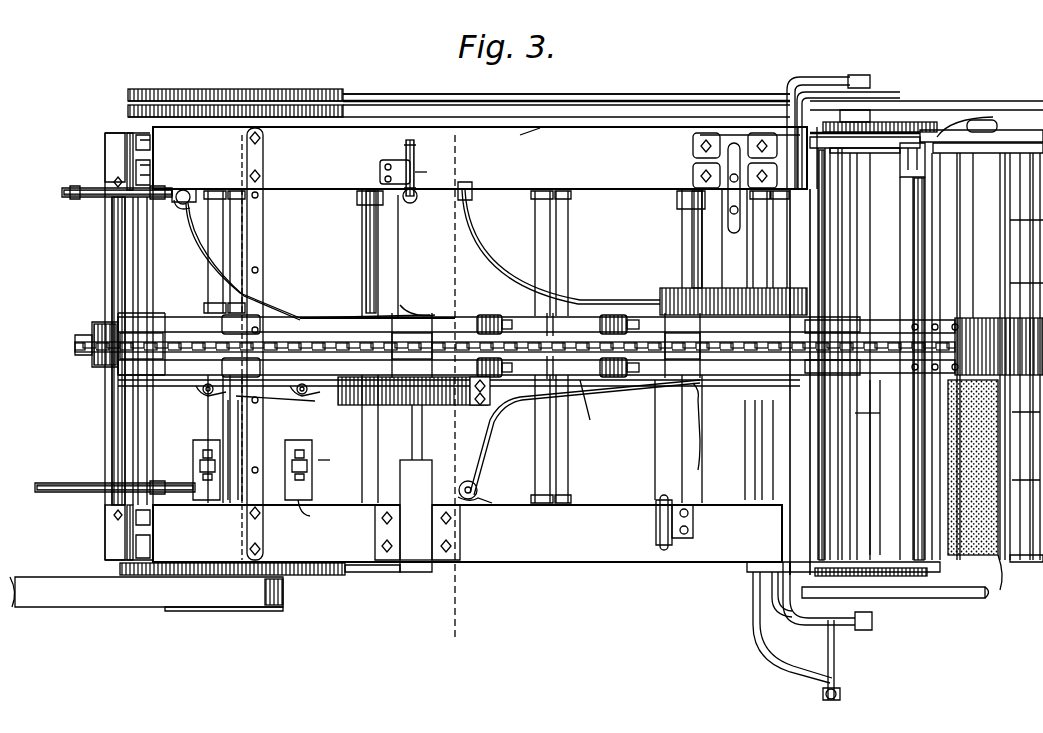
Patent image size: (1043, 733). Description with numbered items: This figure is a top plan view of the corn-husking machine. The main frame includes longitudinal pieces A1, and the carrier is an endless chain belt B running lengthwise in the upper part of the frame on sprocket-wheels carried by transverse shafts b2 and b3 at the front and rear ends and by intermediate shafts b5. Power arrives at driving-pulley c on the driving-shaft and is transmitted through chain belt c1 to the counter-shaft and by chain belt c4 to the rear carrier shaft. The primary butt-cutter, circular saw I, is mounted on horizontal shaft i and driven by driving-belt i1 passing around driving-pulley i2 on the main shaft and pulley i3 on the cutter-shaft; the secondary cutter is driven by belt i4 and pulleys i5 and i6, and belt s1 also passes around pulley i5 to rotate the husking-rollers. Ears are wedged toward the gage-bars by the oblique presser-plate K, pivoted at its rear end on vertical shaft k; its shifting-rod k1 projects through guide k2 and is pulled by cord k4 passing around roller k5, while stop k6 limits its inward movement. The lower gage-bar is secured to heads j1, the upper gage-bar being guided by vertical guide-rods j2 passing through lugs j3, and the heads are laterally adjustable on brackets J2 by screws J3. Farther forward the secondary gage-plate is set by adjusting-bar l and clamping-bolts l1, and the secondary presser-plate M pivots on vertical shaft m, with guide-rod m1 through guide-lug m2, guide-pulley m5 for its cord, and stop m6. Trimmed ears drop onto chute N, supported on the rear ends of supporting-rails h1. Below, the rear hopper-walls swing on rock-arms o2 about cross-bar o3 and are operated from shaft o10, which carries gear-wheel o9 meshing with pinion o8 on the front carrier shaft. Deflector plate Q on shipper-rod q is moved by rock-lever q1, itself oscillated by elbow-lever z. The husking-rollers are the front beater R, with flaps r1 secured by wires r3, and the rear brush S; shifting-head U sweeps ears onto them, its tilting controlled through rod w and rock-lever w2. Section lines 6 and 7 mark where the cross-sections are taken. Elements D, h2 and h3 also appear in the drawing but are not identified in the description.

The pulley i5 is at (310, 82).
The belt s1 is at (638, 104).
The longitudinal pieces A1 is at (585, 165).
The transverse shaft b3 is at (120, 243).
The chain belt c4 is at (68, 198).
The chain belt c1 is at (78, 484).
The section line 6 is at (246, 130).
The section line 7 is at (453, 387).
The vertical shaft k is at (186, 188).
The guide k2 is at (380, 172).
The cord k4 is at (415, 154).
The roller k5 is at (428, 174).
The shifting-rod k1 is at (400, 262).
The stop k6 is at (430, 310).
The intermediate shafts b5 is at (362, 240).
The guide posts h3 is at (268, 318).
The supporting-rails h1 is at (295, 318).
The presser-plate K is at (320, 318).
The primary cutter I is at (596, 303).
The belt i4 is at (535, 130).
The pulley i6 is at (733, 127).
The clamping-bolts l1 is at (728, 214).
The adjusting-bar l is at (727, 238).
The shaft bearings D is at (467, 349).
The chute N is at (962, 352).
The horizontal shaft i is at (411, 432).
The guide-rods j2 is at (203, 391).
The lugs j3 is at (297, 392).
The heads j1 is at (200, 438).
The guide rod h2 is at (276, 450).
The bolts or screws J3 is at (331, 464).
The brackets J2 is at (307, 516).
The secondary presser-plate M is at (495, 425).
The vertical shaft m is at (472, 500).
The endless chain belt B is at (610, 420).
The guide-rod m1 is at (658, 440).
The stop m6 is at (698, 420).
The guide-pulley m5 is at (660, 520).
The guide-lug m2 is at (694, 522).
The driving-pulley c is at (218, 607).
The driving-pulley i2 is at (312, 575).
The driving-belt i1 is at (368, 572).
The pulley i3 is at (418, 572).
The shaft o10 is at (864, 75).
The gear-wheel o9 is at (880, 112).
The pinion o8 is at (920, 128).
The rock-lever w2 is at (990, 128).
The rock-arms o2 is at (870, 158).
The cross-bar o3 is at (850, 232).
The transverse shaft b2 is at (910, 250).
The rod w is at (987, 351).
The flaps r1 is at (1020, 193).
The shifting-head U is at (974, 235).
The wires r3 is at (1020, 283).
The deflector Q is at (886, 416).
The front husking member R is at (994, 467).
The rear husking member S is at (990, 558).
The elbow-lever z is at (788, 630).
The rock-lever q1 is at (815, 665).
The shipper-rod q is at (834, 658).